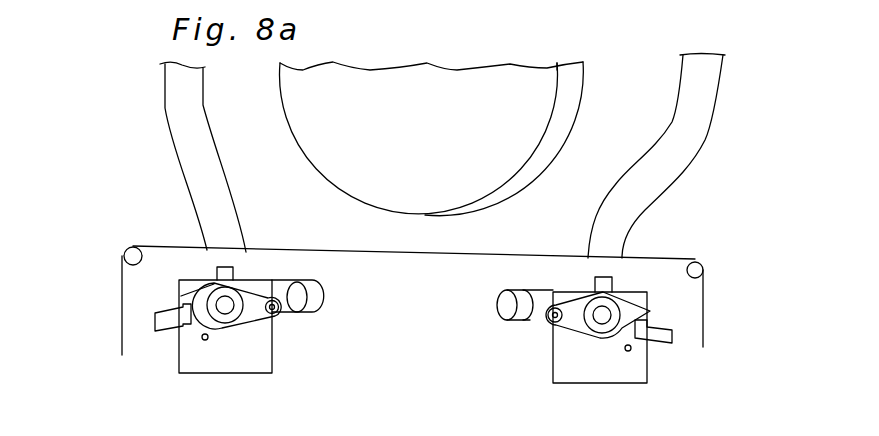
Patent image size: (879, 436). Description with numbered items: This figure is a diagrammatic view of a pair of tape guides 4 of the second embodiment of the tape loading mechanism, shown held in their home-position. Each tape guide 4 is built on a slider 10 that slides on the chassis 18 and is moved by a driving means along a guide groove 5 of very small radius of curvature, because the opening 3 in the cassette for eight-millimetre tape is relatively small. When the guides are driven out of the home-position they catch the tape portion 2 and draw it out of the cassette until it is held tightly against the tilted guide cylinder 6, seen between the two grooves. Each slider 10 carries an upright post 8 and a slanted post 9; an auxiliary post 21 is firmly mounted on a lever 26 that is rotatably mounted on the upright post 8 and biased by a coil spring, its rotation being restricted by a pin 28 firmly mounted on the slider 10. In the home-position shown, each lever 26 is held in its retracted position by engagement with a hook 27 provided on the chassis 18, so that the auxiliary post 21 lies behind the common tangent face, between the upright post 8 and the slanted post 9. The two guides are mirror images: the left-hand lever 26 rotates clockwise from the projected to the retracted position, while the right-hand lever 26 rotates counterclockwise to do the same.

The tape portion 2 is at (707, 303).
The opening 3 is at (388, 318).
The tape guide 4 is at (217, 375).
The guide groove 5 is at (207, 163).
The tilted guide cylinder 6 is at (560, 88).
The upright post 8 is at (212, 292).
The slanted post 9 is at (297, 296).
The slider 10 is at (263, 367).
The chassis 18 is at (583, 163).
The auxiliary post 21 is at (272, 300).
The lever 26 is at (250, 322).
The hook 27 is at (156, 323).
The pin 28 is at (203, 340).